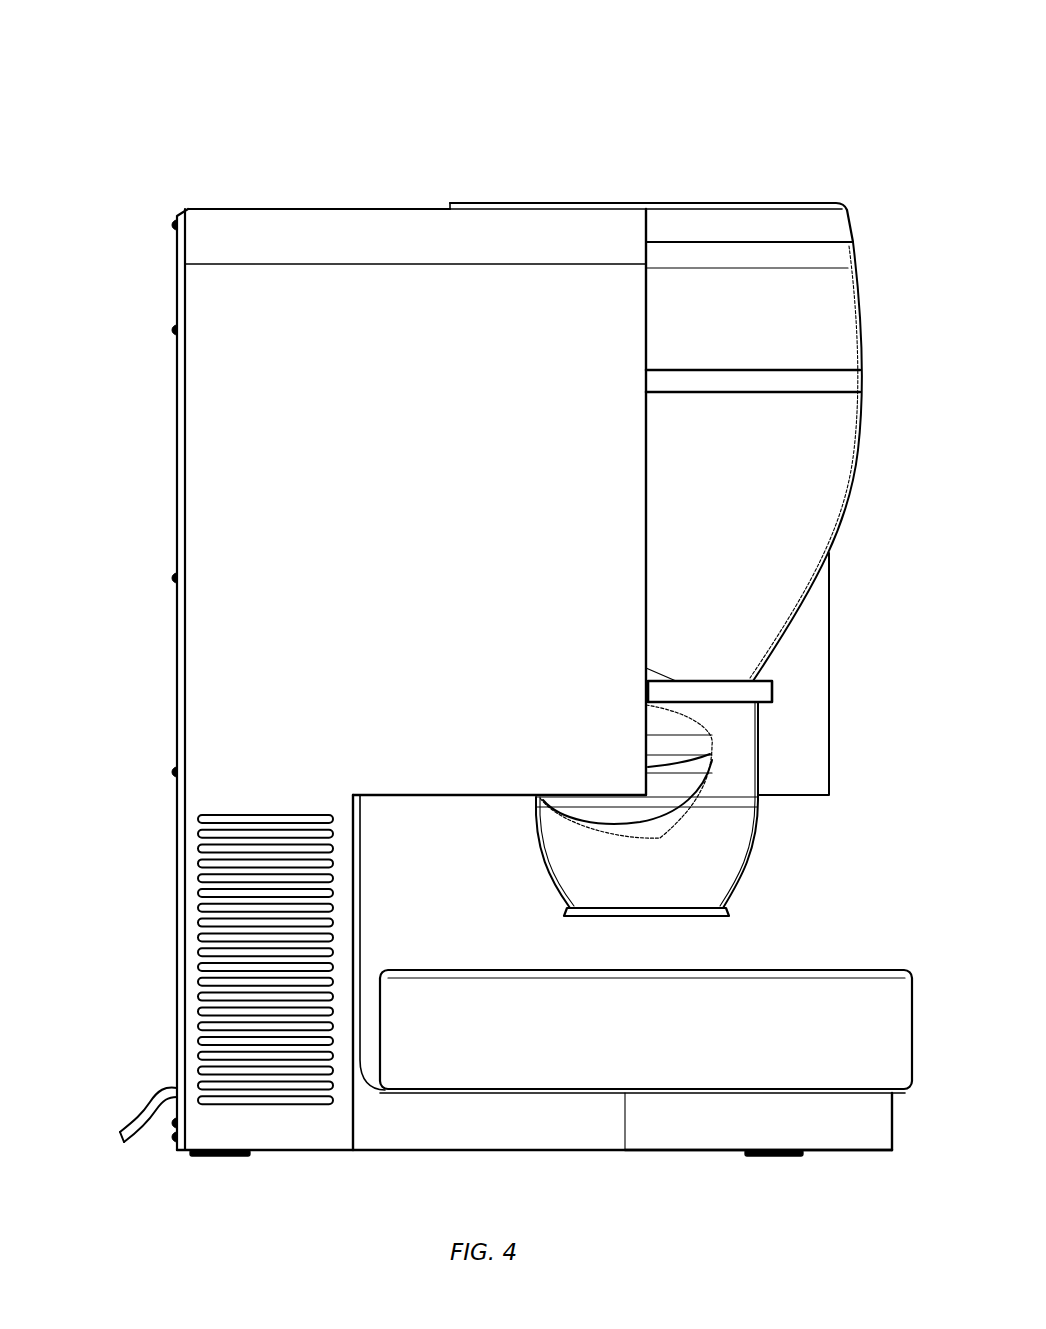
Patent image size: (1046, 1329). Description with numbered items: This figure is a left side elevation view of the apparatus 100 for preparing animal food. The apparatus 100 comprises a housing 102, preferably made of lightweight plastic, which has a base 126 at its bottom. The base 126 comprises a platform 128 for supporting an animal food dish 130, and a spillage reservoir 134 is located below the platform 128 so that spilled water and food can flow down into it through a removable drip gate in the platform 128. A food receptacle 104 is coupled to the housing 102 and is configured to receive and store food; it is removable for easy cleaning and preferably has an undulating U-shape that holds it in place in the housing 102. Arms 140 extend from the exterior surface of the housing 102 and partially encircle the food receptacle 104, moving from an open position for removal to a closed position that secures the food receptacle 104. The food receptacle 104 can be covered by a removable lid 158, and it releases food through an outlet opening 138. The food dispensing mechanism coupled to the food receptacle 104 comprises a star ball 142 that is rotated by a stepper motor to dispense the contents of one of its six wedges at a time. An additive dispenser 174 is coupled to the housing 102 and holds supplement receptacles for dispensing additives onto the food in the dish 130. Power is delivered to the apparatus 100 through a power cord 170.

The apparatus 100 is at (748, 126).
The housing 102 is at (202, 403).
The food receptacle 104 is at (808, 437).
The base 126 is at (267, 1138).
The platform 128 is at (578, 1135).
The animal food dish 130 is at (895, 1006).
The spillage reservoir 134 is at (844, 1135).
The outlet opening 138 is at (722, 860).
The arm 140 is at (845, 383).
The star ball 142 is at (703, 746).
The removable lid 158 is at (777, 222).
The power cord 170 is at (136, 1110).
The additive dispenser 174 is at (798, 766).